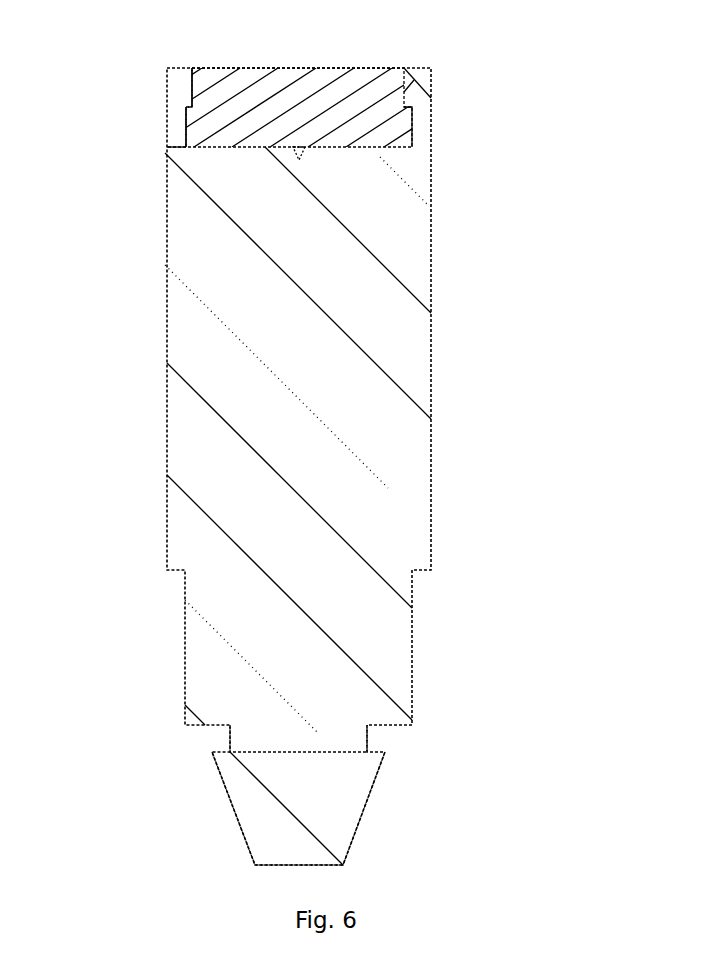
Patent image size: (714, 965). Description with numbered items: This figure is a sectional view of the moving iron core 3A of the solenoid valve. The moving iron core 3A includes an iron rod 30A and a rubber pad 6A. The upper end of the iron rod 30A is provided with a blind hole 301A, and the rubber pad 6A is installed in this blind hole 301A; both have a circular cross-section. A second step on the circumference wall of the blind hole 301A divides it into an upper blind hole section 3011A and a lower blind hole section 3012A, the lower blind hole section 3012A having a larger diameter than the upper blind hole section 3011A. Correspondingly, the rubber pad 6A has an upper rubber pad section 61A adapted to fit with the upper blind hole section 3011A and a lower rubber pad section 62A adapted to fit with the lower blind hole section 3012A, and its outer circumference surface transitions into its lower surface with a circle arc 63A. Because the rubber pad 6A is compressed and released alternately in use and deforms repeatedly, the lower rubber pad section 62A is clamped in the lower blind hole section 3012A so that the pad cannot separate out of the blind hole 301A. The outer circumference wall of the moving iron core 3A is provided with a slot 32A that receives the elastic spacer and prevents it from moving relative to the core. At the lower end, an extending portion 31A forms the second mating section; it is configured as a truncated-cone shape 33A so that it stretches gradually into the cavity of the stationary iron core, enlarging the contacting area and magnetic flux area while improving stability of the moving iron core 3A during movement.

The moving iron core 3A is at (294, 47).
The rubber pad 6A is at (104, 72).
The upper rubber pad section 61A is at (210, 92).
The lower rubber pad section 62A is at (192, 133).
The circle arc 63A is at (178, 148).
The blind hole 301A is at (557, 83).
The upper blind hole section 3011A is at (408, 92).
The lower blind hole section 3012A is at (404, 128).
The iron rod 30A is at (362, 387).
The slot 32A is at (380, 742).
The extending portion 31A is at (364, 810).
The truncated-cone shape 33A is at (370, 808).